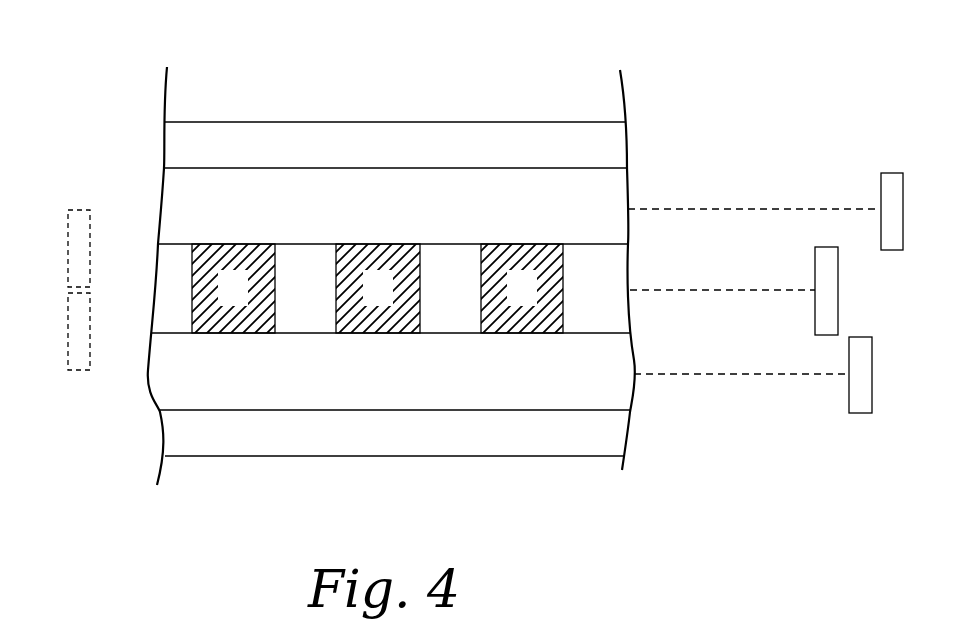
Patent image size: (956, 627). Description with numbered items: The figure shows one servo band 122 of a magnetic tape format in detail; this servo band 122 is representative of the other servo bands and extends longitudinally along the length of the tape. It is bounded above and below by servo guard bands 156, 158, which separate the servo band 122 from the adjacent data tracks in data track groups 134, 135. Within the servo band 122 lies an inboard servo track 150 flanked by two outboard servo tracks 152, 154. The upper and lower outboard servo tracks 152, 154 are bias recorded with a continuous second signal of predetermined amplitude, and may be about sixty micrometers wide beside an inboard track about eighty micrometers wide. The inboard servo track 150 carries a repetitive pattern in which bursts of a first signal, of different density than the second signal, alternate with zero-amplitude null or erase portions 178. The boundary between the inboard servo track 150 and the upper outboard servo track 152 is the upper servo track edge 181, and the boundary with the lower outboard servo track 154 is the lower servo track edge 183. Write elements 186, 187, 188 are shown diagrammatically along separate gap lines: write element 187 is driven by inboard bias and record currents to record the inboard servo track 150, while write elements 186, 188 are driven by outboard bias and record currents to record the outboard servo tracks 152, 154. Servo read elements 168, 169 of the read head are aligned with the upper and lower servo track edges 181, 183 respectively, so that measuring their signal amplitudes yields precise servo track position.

The servo band 122 is at (740, 74).
The data track group 134 is at (473, 82).
The data track group 135 is at (472, 500).
The servo guard band 156 is at (178, 152).
The servo guard band 158 is at (178, 432).
The erase portion 178 is at (288, 253).
The upper servo track edge 181 is at (457, 243).
The lower servo track edge 183 is at (456, 335).
The inboard servo track 150 is at (642, 280).
The upper outboard servo track 152 is at (642, 196).
The lower outboard servo track 154 is at (642, 362).
The write element 186 is at (889, 172).
The write element 187 is at (840, 307).
The write element 188 is at (858, 414).
The servo read element 168 is at (76, 206).
The servo read element 169 is at (76, 373).